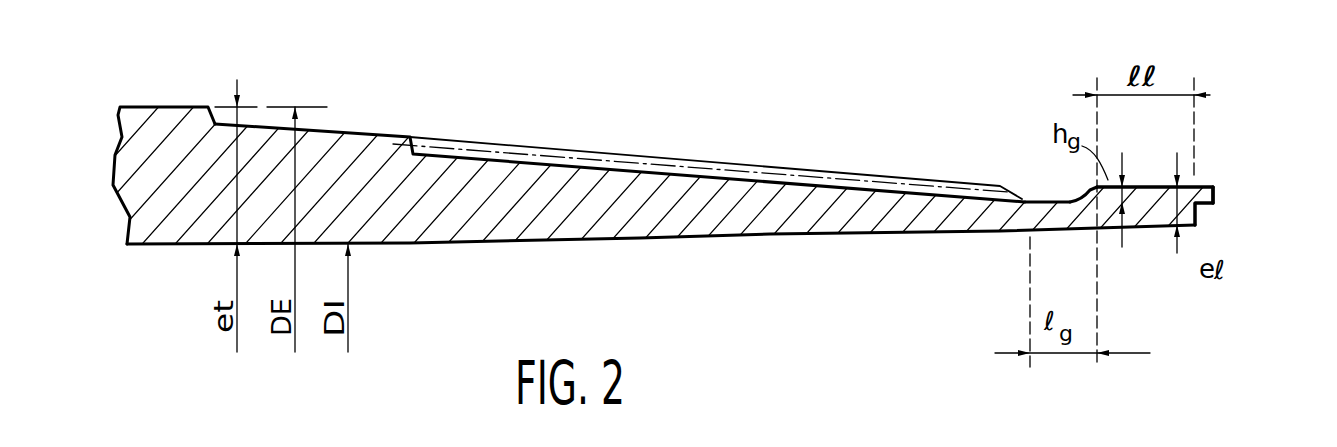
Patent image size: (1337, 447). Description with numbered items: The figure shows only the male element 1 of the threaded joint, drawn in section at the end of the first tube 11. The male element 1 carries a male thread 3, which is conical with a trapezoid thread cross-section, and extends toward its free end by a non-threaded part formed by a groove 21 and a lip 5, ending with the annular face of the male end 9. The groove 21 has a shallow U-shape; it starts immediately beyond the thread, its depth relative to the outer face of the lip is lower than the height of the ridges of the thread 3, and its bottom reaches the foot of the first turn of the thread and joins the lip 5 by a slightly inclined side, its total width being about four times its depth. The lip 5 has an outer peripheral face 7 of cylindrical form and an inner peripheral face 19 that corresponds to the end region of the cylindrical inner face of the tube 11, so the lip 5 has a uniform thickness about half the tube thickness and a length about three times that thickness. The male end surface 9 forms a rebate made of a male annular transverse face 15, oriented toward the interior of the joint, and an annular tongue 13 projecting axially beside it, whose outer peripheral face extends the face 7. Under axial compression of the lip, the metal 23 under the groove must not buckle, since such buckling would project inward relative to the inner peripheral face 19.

The male element 1 is at (720, 155).
The male thread 3 is at (550, 157).
The lip 5 is at (1143, 210).
The outer peripheral face 7 is at (1140, 186).
The annular face of the male end 9 is at (1238, 197).
The first tube 11 is at (165, 158).
The annular tongue 13 is at (1212, 186).
The male annular transverse face 15 is at (1200, 210).
The inner peripheral face 19 is at (717, 237).
The groove 21 is at (1046, 198).
The metal under the groove 23 is at (1033, 222).